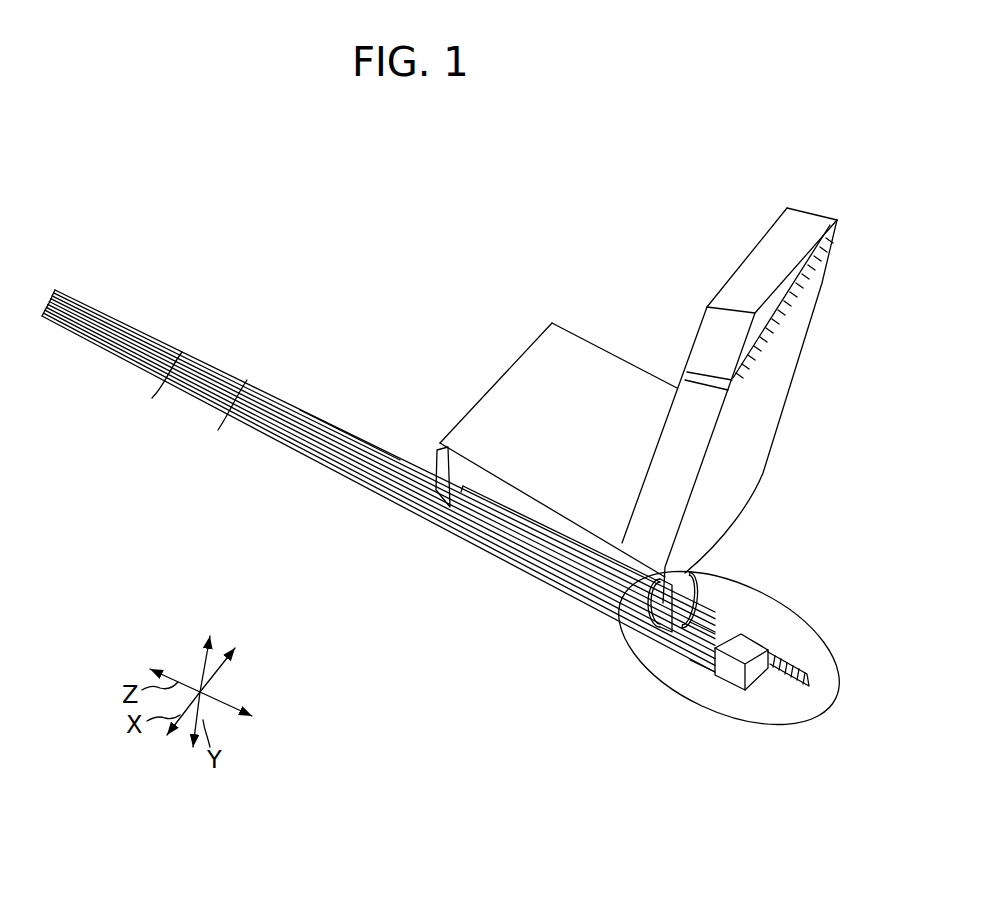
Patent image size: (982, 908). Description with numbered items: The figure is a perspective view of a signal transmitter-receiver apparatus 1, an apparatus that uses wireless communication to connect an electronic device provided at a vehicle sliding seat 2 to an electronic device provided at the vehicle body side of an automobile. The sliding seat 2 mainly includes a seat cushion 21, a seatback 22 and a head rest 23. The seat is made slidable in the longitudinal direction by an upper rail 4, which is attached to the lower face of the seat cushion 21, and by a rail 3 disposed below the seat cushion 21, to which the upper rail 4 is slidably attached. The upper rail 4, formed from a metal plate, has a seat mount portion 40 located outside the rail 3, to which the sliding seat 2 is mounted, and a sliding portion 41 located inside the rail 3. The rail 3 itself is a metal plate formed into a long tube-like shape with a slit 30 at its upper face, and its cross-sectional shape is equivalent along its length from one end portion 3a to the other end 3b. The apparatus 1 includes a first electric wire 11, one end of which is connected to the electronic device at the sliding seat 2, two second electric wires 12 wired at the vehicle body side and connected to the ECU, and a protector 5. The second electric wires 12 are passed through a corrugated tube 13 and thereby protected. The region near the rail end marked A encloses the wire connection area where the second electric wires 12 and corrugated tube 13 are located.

The signal transmitter-receiver apparatus 1 is at (757, 579).
The sliding seat 2 is at (672, 318).
The seat cushion 21 is at (537, 380).
The seatback 22 is at (657, 447).
The head rest 23 is at (778, 222).
The rail 3 is at (264, 443).
The one end portion 3a is at (730, 616).
The fiber other end 3b is at (62, 288).
The slit 30 is at (382, 470).
The upper rail 4 is at (573, 541).
The seat mount portion 40 is at (505, 510).
The sliding portion 41 is at (447, 487).
The protector 5 is at (673, 640).
The first electric wire 11 is at (690, 572).
The second electric wire 12 is at (806, 654).
The corrugated tube 13 is at (800, 687).
The region A is at (772, 733).